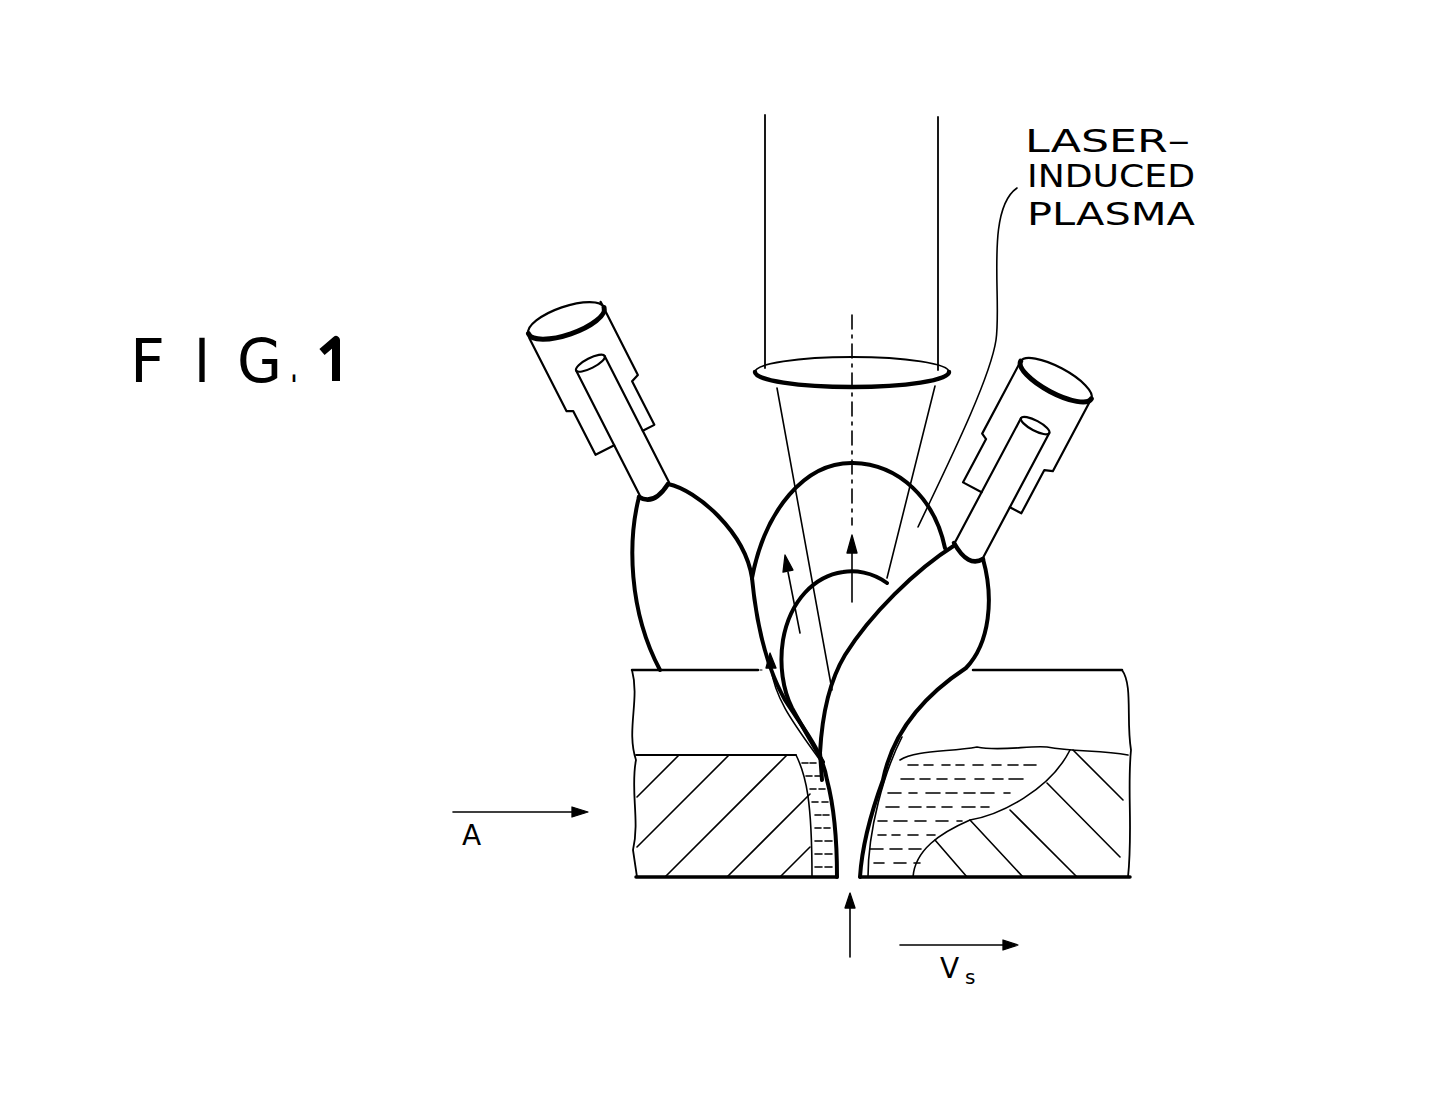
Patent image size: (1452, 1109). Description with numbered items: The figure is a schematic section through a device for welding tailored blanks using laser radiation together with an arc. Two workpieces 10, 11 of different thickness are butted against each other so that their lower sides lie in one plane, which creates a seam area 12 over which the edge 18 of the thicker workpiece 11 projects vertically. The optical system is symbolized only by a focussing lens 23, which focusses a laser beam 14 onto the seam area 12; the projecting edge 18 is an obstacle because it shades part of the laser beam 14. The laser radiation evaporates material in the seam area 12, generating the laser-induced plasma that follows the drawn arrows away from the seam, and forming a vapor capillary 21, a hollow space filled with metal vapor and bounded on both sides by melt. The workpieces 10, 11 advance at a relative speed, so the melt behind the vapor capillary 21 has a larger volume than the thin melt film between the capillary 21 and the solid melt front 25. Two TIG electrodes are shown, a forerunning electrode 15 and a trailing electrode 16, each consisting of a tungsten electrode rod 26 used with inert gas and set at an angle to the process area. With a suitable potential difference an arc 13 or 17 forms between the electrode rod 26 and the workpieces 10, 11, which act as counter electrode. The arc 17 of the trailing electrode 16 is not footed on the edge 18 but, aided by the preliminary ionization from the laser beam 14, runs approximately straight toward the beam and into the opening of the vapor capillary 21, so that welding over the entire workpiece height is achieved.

The workpiece 10 is at (712, 847).
The workpiece 11 is at (1097, 788).
The seam area 12 is at (853, 945).
The arc 13 is at (645, 586).
The laser beam 14 is at (815, 172).
The forerunning electrode 15 is at (700, 272).
The trailing electrode 16 is at (1083, 436).
The arc 17 is at (963, 618).
The edge 18 is at (1122, 672).
The vapor capillary 21 is at (850, 823).
The focussing lens 23 is at (760, 361).
The solid melt front 25 is at (770, 699).
The electrode rod 26 is at (642, 470).